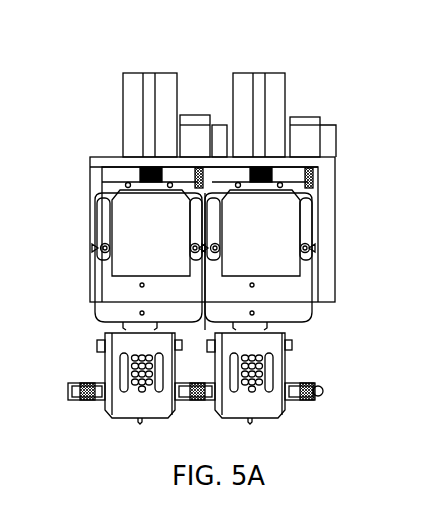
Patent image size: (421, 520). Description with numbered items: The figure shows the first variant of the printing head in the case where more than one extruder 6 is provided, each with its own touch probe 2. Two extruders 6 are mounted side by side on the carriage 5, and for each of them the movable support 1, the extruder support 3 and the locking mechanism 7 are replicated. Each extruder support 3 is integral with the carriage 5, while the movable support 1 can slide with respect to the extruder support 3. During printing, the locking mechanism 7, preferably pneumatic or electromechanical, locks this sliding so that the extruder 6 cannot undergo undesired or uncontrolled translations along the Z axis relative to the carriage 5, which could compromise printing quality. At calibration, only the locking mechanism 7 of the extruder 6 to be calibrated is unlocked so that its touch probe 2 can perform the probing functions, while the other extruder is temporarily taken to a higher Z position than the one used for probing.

The movable support 1 is at (103, 194).
The touch probe 2 is at (204, 116).
The extruder support 3 is at (130, 303).
The carriage 5 is at (208, 322).
The extruder 6 is at (102, 350).
The locking mechanism 7 is at (123, 112).